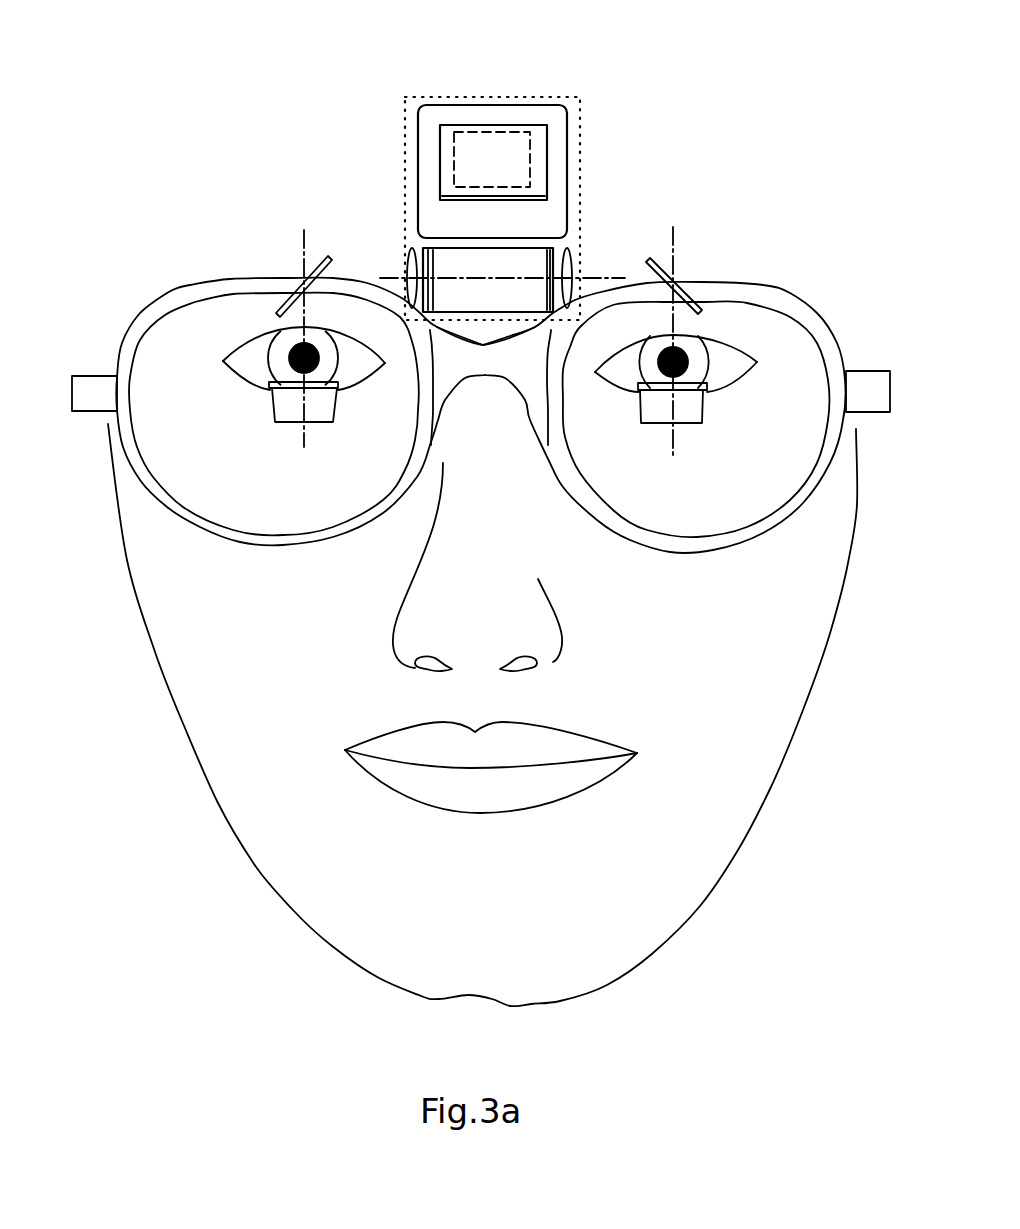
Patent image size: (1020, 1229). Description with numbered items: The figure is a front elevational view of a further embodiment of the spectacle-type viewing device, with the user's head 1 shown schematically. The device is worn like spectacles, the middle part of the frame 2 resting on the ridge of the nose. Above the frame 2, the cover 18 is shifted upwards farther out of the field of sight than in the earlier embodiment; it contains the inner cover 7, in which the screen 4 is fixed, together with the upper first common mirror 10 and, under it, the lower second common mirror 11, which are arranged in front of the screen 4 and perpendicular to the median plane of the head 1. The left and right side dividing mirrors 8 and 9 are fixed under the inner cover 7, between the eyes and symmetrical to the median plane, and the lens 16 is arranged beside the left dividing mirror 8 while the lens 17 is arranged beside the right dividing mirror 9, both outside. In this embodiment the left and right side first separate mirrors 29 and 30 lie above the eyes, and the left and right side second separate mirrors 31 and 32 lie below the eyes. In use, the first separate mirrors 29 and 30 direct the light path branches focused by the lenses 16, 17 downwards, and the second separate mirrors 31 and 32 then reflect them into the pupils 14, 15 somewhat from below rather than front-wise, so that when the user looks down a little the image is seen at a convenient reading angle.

The head 1 is at (765, 801).
The frame 2 is at (803, 302).
The screen 4 is at (483, 127).
The inner cover 7 is at (418, 115).
The left side dividing mirror 8 is at (417, 252).
The right side dividing mirror 9 is at (565, 252).
The first common mirror 10 is at (547, 178).
The second common mirror 11 is at (420, 343).
The left pupil 14 is at (287, 357).
The right pupil 15 is at (687, 357).
The lens 16 is at (409, 258).
The lens 17 is at (568, 258).
The cover 18 is at (530, 97).
The left side first separate mirror 29 is at (286, 296).
The right side first separate mirror 30 is at (673, 278).
The left side second separate mirror 31 is at (288, 403).
The right side second separate mirror 32 is at (688, 403).